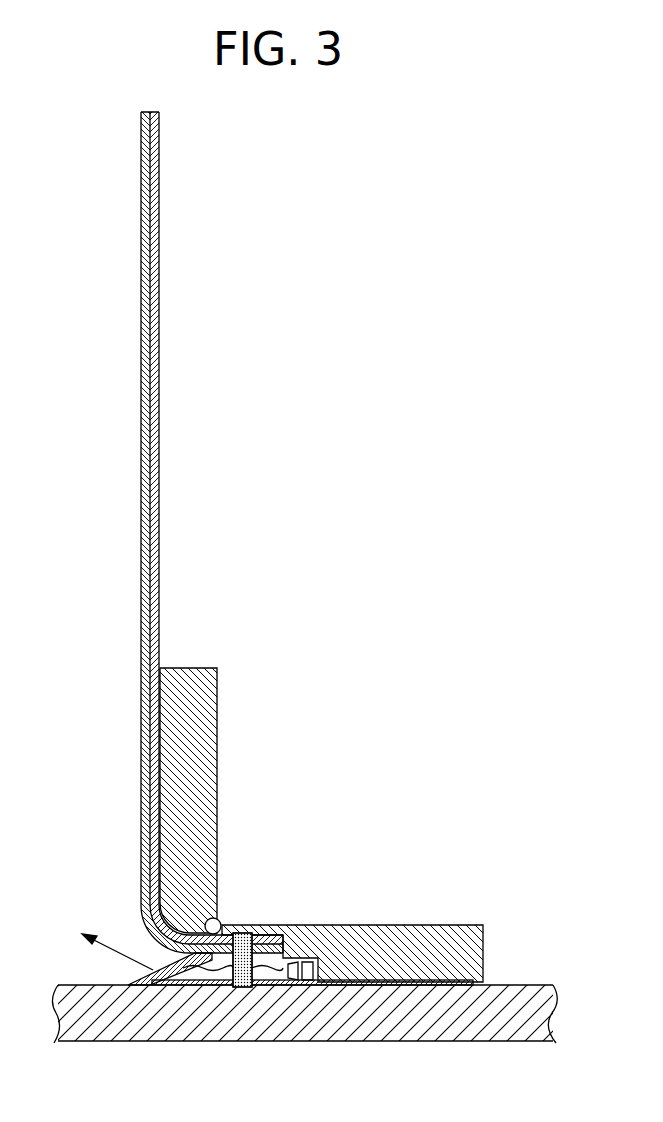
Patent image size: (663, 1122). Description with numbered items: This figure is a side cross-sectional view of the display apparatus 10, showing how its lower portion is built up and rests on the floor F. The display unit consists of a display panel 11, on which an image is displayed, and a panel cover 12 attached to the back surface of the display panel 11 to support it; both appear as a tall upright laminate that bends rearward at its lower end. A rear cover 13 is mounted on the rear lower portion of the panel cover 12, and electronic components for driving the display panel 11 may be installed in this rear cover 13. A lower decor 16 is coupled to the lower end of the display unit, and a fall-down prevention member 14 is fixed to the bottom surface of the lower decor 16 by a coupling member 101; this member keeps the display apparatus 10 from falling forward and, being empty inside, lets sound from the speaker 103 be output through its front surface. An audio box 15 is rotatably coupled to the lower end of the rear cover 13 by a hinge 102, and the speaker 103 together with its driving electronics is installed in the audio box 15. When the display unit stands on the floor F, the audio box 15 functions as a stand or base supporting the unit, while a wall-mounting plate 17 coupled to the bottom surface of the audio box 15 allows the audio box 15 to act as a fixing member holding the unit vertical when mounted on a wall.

The display apparatus 10 is at (349, 240).
The display panel 11 is at (146, 262).
The panel cover 12 is at (155, 290).
The rear cover 13 is at (220, 689).
The fall-down prevention member 14 is at (174, 987).
The audio box 15 is at (403, 926).
The lower decor 16 is at (141, 902).
The wall-mounting plate 17 is at (418, 988).
The coupling member 101 is at (243, 988).
The hinge 102 is at (222, 918).
The speaker 103 is at (300, 985).
The floor F is at (498, 1020).